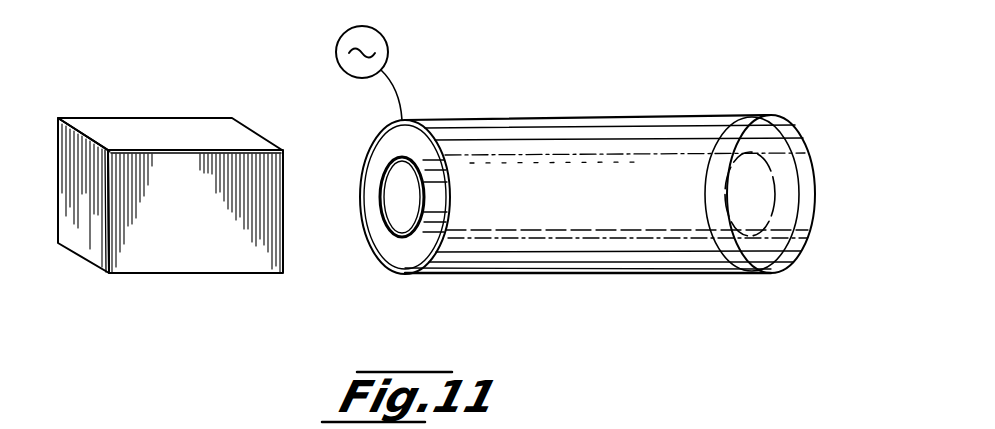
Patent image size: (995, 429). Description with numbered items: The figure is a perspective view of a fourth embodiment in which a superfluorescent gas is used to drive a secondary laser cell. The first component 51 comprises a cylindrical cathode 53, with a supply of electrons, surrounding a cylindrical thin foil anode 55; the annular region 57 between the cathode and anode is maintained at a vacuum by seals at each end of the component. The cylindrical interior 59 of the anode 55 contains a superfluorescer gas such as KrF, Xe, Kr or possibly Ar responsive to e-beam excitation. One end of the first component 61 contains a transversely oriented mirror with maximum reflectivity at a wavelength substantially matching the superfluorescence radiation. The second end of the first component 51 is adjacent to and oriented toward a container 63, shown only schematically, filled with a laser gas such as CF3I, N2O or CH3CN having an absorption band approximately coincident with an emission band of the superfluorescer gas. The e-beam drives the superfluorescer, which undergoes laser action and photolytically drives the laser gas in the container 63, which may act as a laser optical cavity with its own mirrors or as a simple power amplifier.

The first component 51 is at (572, 97).
The cylindrical cathode 53 is at (402, 277).
The cylindrical thin foil anode 55 is at (385, 228).
The annular region 57 is at (402, 250).
The cylindrical interior 59 is at (413, 207).
The end of the first component 61 is at (808, 238).
The container 63 is at (170, 253).